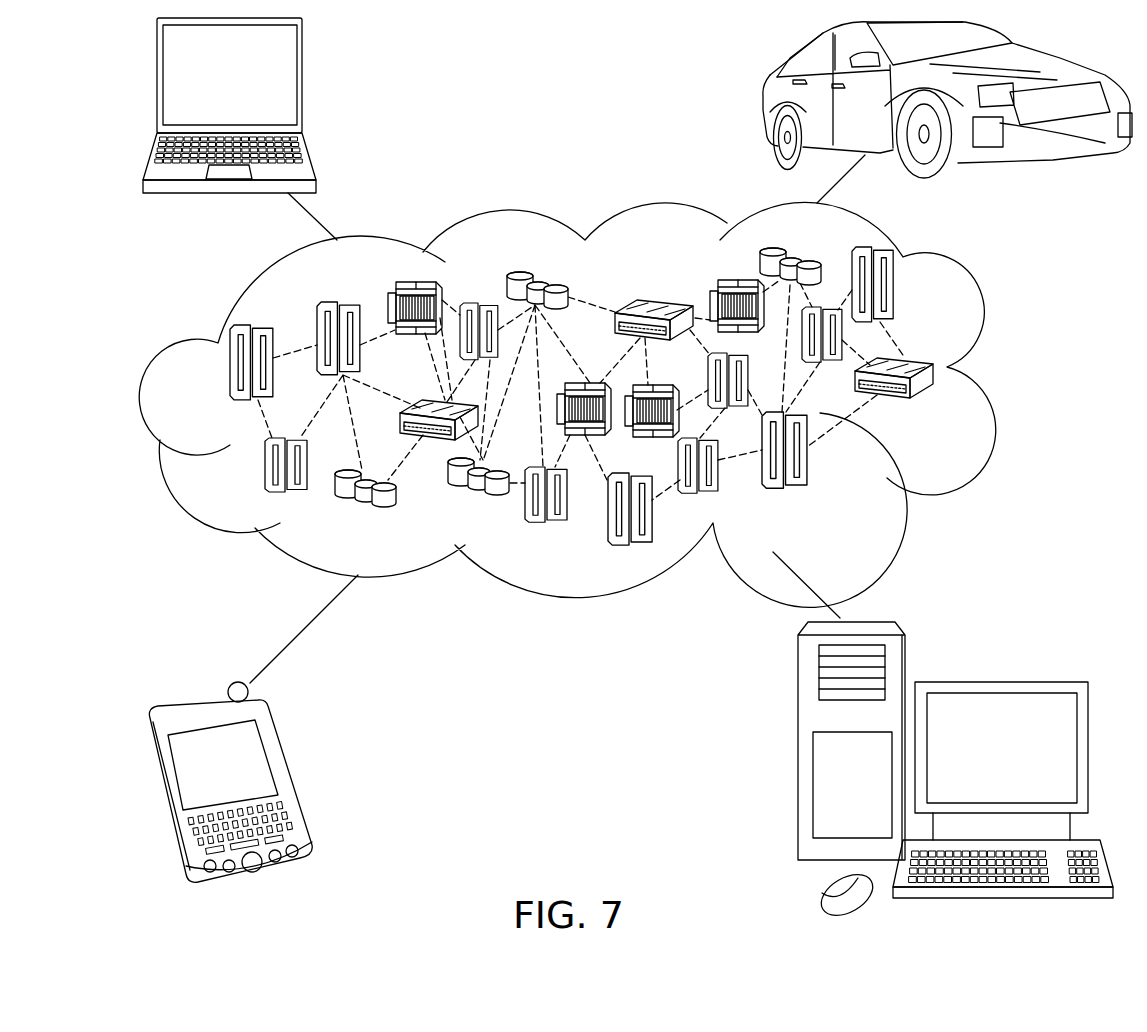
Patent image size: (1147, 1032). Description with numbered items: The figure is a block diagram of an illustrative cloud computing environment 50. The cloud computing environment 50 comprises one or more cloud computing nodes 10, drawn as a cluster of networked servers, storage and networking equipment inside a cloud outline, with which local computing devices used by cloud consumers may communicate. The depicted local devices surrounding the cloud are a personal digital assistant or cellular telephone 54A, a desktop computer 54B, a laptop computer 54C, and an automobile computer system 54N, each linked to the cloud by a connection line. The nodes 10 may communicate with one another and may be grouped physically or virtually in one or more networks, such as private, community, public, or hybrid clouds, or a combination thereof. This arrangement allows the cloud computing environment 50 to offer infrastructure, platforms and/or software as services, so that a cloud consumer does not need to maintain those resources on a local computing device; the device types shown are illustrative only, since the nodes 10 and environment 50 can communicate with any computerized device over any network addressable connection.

The cloud computing nodes 10 is at (937, 405).
The cloud computing environment 50 is at (998, 373).
The personal digital assistant (PDA) or cellular telephone 54A is at (292, 778).
The desktop computer 54B is at (999, 681).
The laptop computer 54C is at (303, 81).
The automobile computer system 54N is at (765, 100).